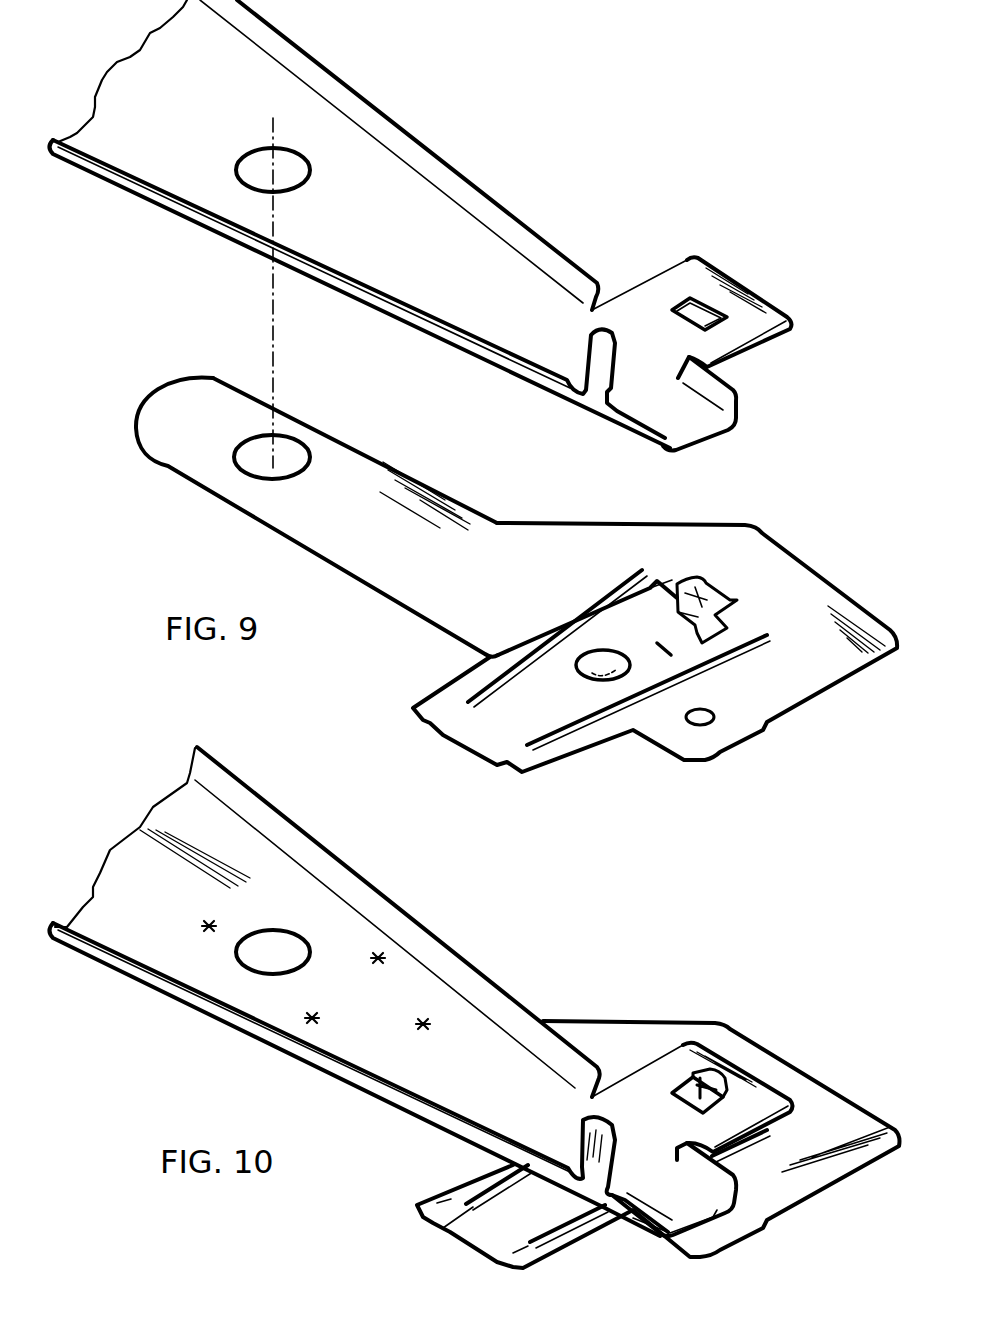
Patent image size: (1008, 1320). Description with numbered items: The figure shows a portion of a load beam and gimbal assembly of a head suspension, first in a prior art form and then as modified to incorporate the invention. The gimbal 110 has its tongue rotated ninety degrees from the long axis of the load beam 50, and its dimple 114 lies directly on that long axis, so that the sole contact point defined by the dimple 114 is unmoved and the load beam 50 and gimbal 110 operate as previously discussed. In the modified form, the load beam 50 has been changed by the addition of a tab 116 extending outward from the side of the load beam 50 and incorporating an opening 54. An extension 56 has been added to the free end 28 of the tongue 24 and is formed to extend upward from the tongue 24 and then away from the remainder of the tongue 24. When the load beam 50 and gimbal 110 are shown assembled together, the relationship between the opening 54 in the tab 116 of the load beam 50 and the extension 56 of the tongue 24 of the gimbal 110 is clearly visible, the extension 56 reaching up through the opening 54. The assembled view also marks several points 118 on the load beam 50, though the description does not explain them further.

In FIG. 9, the load beam 50 is at (363, 209).
In FIG. 10, the load beam 50 is at (147, 888).
In FIG. 9, the opening 54 is at (697, 310).
In FIG. 10, the opening 54 is at (727, 1103).
In FIG. 9, the tab 116 is at (767, 313).
In FIG. 10, the tab 116 is at (670, 1063).
In FIG. 9, the dimple 114 is at (602, 658).
In FIG. 9, the free end 28 is at (671, 622).
In FIG. 9, the extension 56 is at (700, 593).
In FIG. 10, the extension 56 is at (690, 1093).
In FIG. 9, the tongue 24 is at (528, 702).
In FIG. 9, the gimbal 110 is at (613, 734).
In FIG. 10, the gimbal 110 is at (793, 1190).
In FIG. 10, the weld points 118 is at (420, 1028).